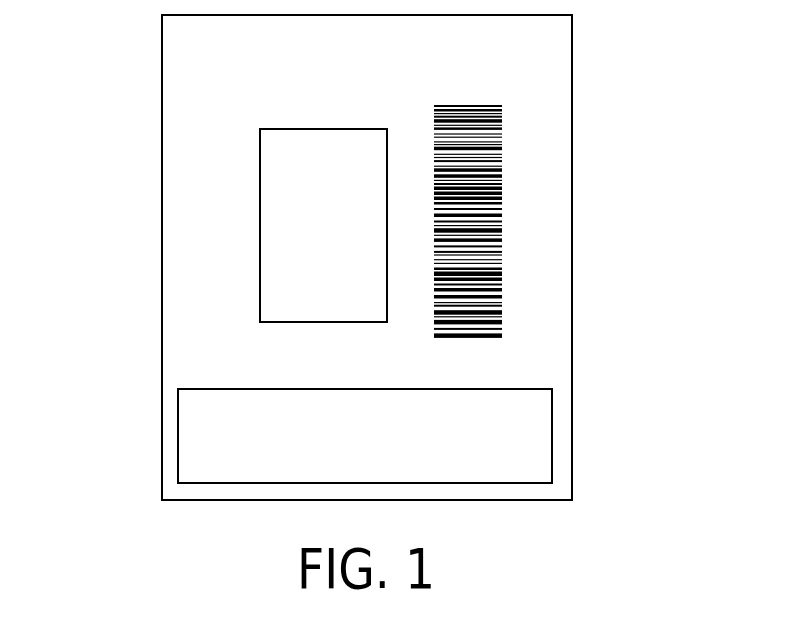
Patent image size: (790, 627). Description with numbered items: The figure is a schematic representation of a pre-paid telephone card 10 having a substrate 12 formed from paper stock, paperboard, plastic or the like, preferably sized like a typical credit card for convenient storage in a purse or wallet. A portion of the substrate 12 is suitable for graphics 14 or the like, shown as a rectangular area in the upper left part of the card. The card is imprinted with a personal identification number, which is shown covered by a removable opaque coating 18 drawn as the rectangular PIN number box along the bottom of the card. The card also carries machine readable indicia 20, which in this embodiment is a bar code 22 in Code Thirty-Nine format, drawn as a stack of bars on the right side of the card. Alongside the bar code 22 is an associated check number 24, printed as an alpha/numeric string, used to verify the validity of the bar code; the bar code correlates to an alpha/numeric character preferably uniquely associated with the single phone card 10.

The pre-paid telephone card 10 is at (572, 51).
The substrate 12 is at (178, 103).
The graphics area 14 is at (273, 200).
The removable opaque coating 18 is at (197, 468).
The machine readable indicia 20 is at (503, 125).
The bar code 22 is at (503, 333).
The check number 24 is at (543, 280).